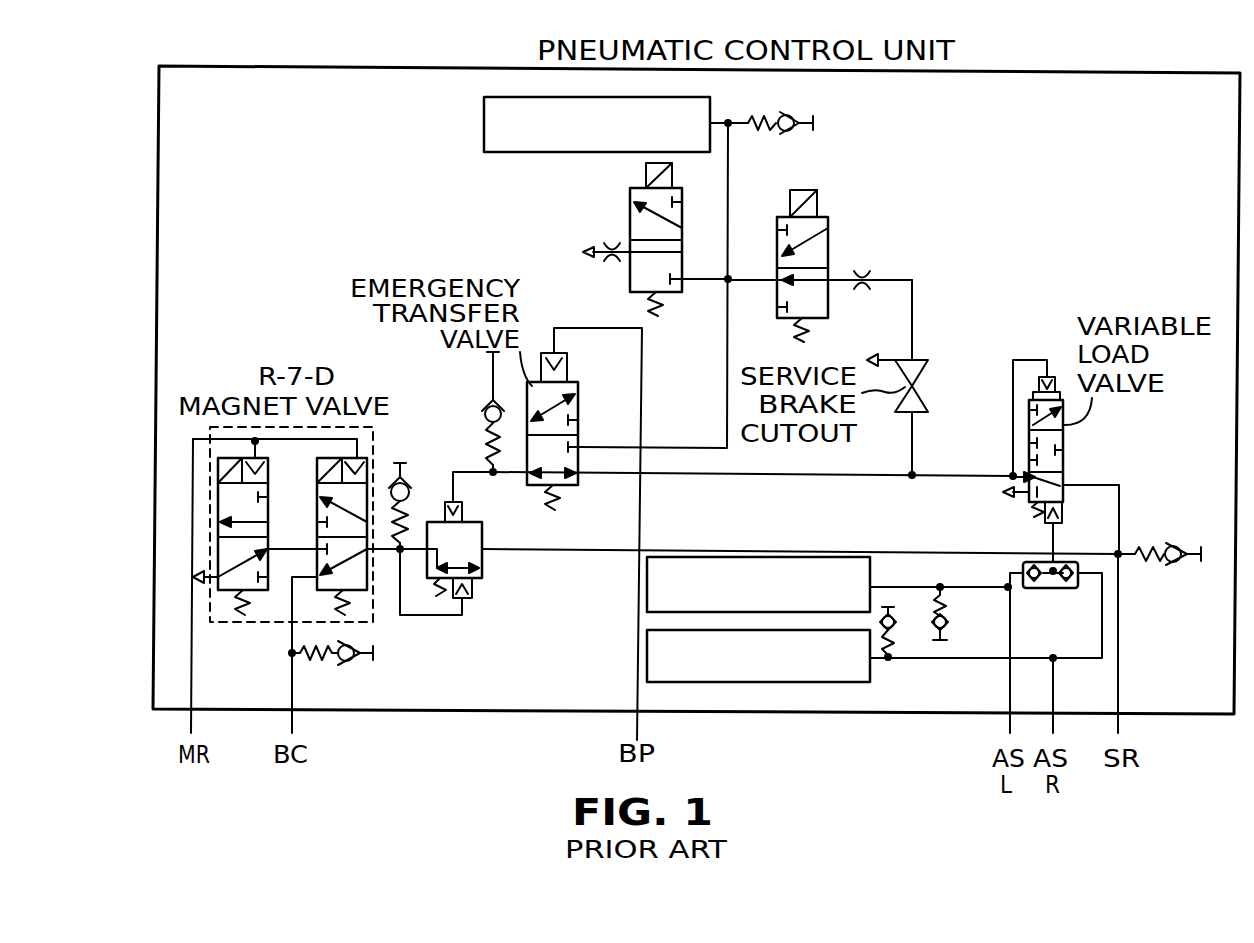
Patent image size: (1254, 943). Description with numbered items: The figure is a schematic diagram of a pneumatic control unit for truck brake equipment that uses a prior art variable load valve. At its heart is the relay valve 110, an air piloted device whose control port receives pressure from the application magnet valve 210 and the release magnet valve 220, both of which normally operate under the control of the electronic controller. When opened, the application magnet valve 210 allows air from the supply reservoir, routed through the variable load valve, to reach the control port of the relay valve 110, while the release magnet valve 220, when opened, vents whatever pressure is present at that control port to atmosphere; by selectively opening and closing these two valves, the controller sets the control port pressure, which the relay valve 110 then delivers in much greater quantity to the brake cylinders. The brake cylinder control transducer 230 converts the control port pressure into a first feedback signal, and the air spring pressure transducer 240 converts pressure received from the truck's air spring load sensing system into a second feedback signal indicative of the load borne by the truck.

The brake cylinder control transducer 230 is at (484, 122).
The release magnet valve 220 is at (630, 218).
The application magnet valve 210 is at (828, 240).
The relay valve 110 is at (438, 521).
The air spring pressure transducer 240 is at (872, 570).